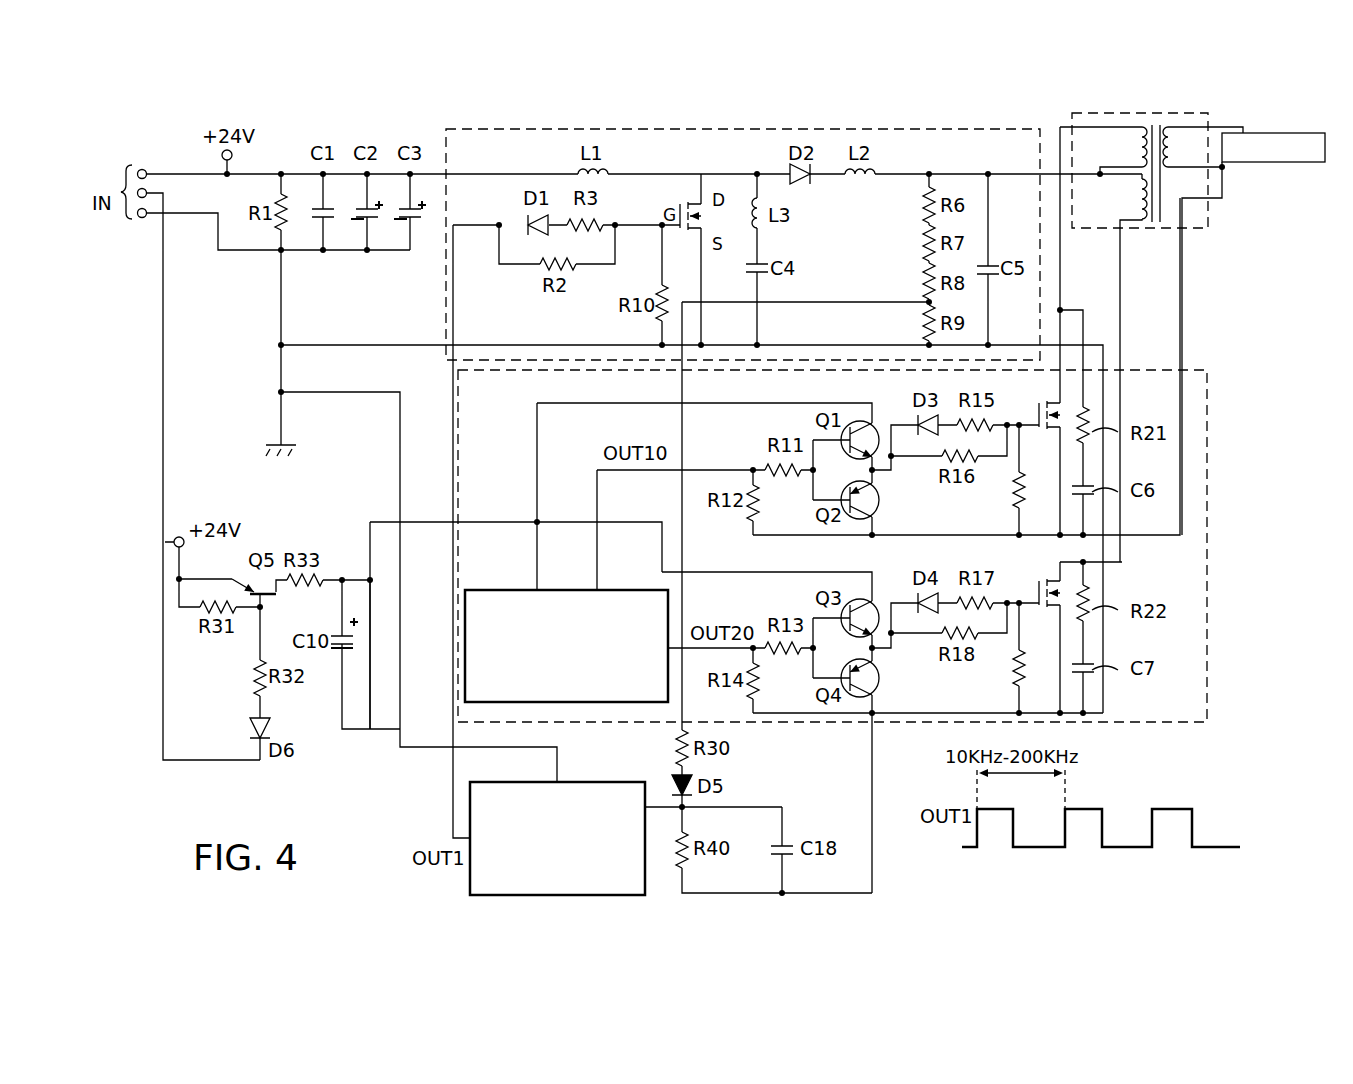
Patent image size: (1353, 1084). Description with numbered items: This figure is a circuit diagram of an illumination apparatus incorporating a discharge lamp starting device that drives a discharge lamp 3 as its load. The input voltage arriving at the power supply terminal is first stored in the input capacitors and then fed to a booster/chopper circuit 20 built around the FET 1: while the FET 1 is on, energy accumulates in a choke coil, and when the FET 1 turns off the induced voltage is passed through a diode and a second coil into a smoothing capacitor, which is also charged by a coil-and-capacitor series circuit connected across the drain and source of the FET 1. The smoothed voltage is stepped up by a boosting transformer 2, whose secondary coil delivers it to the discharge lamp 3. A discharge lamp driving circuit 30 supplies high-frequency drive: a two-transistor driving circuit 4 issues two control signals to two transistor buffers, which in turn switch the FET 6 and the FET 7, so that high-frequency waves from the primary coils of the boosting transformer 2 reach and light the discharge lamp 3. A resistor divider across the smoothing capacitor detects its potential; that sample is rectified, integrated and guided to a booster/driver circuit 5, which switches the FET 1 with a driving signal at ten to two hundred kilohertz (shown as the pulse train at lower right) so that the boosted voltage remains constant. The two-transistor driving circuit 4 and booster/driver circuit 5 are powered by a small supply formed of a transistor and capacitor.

The FET 1 is at (714, 217).
The boosting transformer 2 is at (1208, 222).
The discharge lamp 3 is at (1290, 163).
The two-transistor driving circuit 4 is at (567, 590).
The booster/driver circuit 5 is at (613, 782).
The FET 6 is at (1046, 431).
The FET 7 is at (1046, 609).
The booster/chopper circuit 20 is at (446, 300).
The discharge lamp driving circuit 30 is at (1207, 572).